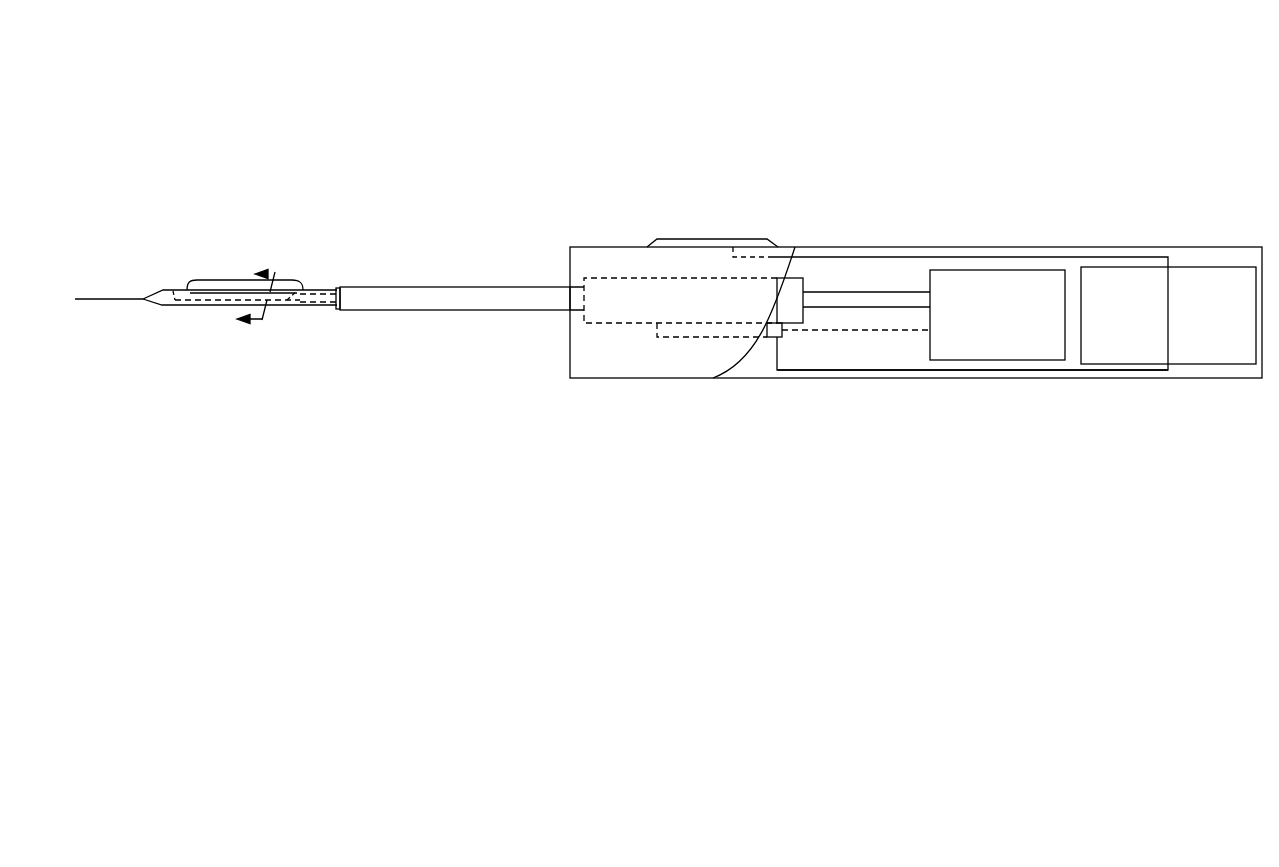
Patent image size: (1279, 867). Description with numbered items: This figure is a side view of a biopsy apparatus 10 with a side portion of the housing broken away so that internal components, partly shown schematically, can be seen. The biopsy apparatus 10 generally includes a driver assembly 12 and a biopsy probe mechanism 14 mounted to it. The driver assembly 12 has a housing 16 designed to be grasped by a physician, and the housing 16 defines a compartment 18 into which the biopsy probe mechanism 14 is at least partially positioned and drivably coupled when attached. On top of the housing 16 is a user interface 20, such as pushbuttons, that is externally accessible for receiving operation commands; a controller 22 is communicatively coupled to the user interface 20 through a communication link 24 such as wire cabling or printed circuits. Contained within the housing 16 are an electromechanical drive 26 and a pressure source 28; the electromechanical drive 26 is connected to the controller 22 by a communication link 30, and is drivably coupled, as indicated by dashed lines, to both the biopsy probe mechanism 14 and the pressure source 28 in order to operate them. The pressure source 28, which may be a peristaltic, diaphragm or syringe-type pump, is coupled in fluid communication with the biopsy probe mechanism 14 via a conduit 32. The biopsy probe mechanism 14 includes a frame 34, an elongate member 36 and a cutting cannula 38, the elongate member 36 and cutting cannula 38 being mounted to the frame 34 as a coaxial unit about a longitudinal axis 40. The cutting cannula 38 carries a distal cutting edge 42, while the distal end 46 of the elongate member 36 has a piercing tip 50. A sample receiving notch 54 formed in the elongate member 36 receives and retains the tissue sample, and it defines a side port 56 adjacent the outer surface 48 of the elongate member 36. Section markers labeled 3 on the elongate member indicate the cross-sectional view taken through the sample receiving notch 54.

The biopsy apparatus 10 is at (948, 87).
The driver assembly 12 is at (1186, 220).
The biopsy probe mechanism 14 is at (821, 263).
The housing 16 is at (687, 378).
The compartment 18 is at (1171, 263).
The user interface 20 is at (692, 238).
The controller 22 is at (1210, 258).
The communication link 24 is at (973, 257).
The electromechanical drive 26 is at (758, 338).
The pressure source 28 is at (997, 315).
The communication link 30 is at (912, 370).
The conduit 32 is at (873, 292).
The frame 34 is at (610, 323).
The elongate member 36 is at (162, 217).
The cutting cannula 38 is at (418, 287).
The longitudinal axis 40 is at (110, 298).
The distal cutting edge 42 is at (328, 310).
The distal end 46 is at (146, 328).
The outer surface 48 is at (320, 287).
The piercing tip 50 is at (145, 298).
The sample receiving notch 54 is at (240, 280).
The side port 56 is at (227, 272).
The section line 3- 3 is at (253, 295).